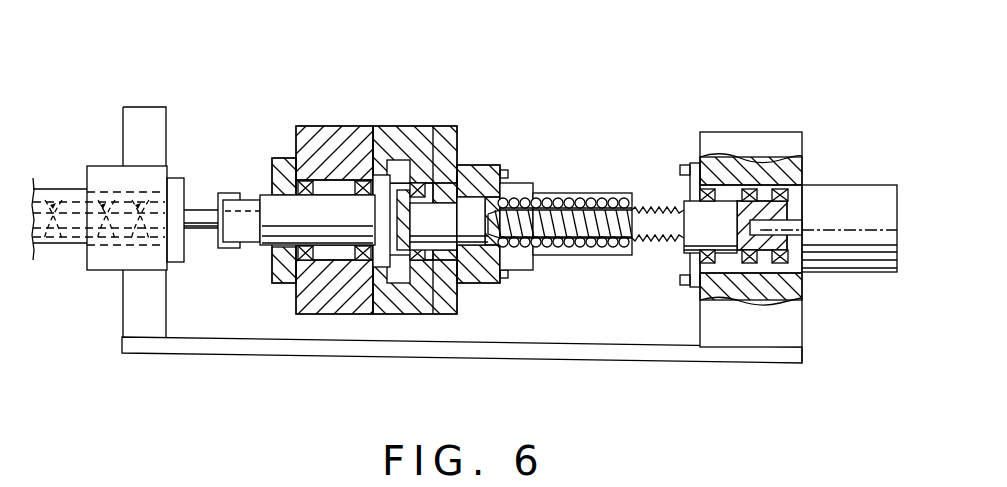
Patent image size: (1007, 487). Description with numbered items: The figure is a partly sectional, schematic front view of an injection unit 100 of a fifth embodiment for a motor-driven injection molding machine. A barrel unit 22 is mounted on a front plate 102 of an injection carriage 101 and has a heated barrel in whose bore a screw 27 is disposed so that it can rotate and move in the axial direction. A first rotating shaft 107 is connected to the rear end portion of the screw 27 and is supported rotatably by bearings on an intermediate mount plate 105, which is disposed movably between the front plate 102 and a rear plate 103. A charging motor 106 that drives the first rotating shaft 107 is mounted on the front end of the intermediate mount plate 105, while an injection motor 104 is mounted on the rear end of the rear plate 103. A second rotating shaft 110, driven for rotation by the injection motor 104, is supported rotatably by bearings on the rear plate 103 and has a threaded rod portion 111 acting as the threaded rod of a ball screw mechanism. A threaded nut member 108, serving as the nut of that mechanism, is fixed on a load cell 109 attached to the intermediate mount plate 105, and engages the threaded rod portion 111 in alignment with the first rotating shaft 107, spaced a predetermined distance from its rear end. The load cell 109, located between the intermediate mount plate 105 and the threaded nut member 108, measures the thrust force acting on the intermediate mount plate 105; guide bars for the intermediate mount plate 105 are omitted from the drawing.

The barrel unit 22 is at (62, 190).
The screw 27 is at (78, 232).
The injection unit 100 is at (145, 96).
The injection carriage 101 is at (169, 358).
The front plate 102 is at (131, 307).
The rear plate 103 is at (750, 138).
The injection motor 104 is at (850, 273).
The intermediate mount plate 105 is at (398, 126).
The charging motor 106 is at (335, 126).
The first rotating shaft 107 is at (262, 240).
The threaded nut member 108 is at (568, 193).
The load cell 109 is at (481, 274).
The second rotating shaft 110 is at (652, 249).
The threaded rod portion 111 is at (650, 207).